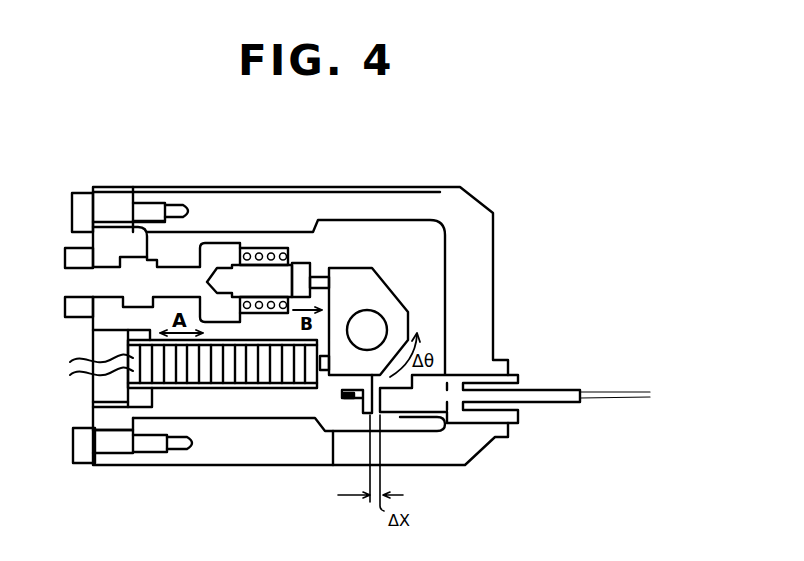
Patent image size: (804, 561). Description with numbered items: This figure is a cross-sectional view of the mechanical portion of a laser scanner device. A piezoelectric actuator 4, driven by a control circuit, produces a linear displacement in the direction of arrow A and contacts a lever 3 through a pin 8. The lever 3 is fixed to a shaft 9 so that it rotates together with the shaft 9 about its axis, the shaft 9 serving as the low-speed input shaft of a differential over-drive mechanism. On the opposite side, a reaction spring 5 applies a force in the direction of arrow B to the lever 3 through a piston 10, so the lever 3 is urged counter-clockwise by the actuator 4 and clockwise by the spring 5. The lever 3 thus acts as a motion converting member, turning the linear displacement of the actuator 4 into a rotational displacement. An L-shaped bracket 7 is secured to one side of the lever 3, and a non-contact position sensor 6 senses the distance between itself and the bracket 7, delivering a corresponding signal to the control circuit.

The lever 3 is at (370, 285).
The piezoelectric actuator 4 is at (237, 385).
The reaction spring 5 is at (272, 253).
The position sensor 6 is at (450, 393).
The bracket 7 is at (340, 388).
The pin 8 is at (322, 372).
The shaft 9 is at (377, 322).
The piston 10 is at (305, 268).